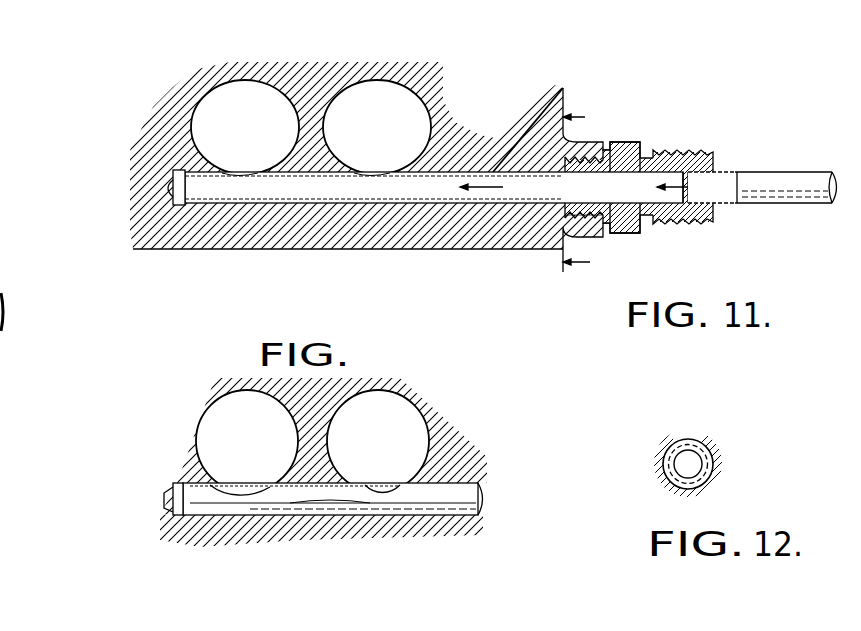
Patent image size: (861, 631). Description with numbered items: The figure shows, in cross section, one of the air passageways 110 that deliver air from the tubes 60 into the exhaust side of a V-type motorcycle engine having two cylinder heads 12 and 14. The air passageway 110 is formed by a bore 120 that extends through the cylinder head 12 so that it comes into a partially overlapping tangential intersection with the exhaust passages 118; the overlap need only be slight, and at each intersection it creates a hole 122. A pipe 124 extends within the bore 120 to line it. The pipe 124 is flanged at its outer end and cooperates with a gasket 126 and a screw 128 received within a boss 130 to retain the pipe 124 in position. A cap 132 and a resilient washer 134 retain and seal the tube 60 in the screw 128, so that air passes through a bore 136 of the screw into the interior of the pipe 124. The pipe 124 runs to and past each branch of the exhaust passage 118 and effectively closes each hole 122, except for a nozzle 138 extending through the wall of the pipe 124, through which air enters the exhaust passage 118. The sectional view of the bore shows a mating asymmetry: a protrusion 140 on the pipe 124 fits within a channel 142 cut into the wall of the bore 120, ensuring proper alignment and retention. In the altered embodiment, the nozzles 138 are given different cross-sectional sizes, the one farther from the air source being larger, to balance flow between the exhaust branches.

In FIG. 11, the cylinder head 12 is at (596, 193).
In FIG. 11, the cylinder head 14 is at (455, 249).
In FIG. 13, the cylinder head 14 is at (447, 455).
In FIG. 12, the cylinder head 14 is at (690, 441).
In FIG. 11, the tube 60 is at (743, 196).
In FIG. 11, the air passageway 110 is at (447, 168).
In FIG. 13, the air passageway 110 is at (318, 520).
In FIG. 12, the air passageway 110 is at (703, 447).
In FIG. 11, the exhaust passage 118 is at (264, 84).
In FIG. 13, the exhaust passage 118 is at (262, 400).
In FIG. 11, the bore 120 is at (173, 172).
In FIG. 13, the bore 120 is at (180, 483).
In FIG. 13, the hole 122 is at (272, 478).
In FIG. 11, the pipe 124 is at (413, 204).
In FIG. 13, the pipe 124 is at (196, 516).
In FIG. 12, the pipe 124 is at (668, 487).
In FIG. 11, the gasket 126 is at (557, 216).
In FIG. 11, the screw 128 is at (634, 221).
In FIG. 11, the boss 130 is at (605, 140).
In FIG. 11, the cap 132 is at (688, 222).
In FIG. 11, the resilient washer 134 is at (697, 153).
In FIG. 11, the bore of the screw 136 is at (623, 200).
In FIG. 11, the nozzle 138 is at (253, 180).
In FIG. 13, the nozzle 138 is at (262, 492).
In FIG. 12, the protrusion 140 is at (707, 474).
In FIG. 12, the channel 142 is at (715, 467).